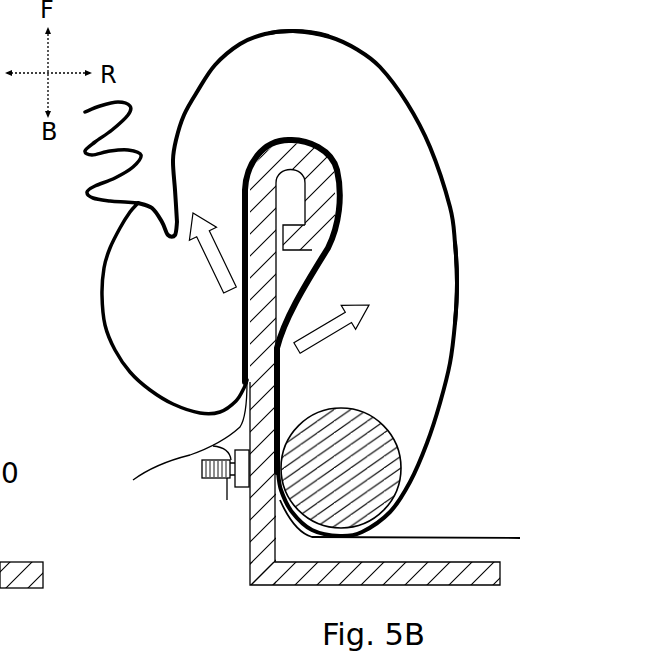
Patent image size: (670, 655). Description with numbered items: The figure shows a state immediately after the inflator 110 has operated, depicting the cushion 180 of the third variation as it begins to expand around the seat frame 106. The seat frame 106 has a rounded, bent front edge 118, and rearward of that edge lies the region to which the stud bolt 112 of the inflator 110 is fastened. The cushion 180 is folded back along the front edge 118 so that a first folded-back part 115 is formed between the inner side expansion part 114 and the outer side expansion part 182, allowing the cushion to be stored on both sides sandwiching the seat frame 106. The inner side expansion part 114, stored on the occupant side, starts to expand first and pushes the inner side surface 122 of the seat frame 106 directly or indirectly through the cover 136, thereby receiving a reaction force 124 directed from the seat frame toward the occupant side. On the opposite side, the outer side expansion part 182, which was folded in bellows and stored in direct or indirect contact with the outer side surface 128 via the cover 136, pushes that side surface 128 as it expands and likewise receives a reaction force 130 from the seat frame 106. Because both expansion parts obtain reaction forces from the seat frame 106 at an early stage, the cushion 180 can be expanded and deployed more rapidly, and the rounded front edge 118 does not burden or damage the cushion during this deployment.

The seat frame 106 is at (280, 588).
The inflator 110 is at (402, 470).
The stud bolt 112 is at (222, 483).
The inner side expansion part 114 is at (458, 245).
The first folded-back part 115 is at (288, 33).
The front edge 118 is at (294, 140).
The side surface 122 is at (281, 372).
The reaction force 124 is at (364, 297).
The side surface 128 is at (243, 345).
The reaction force 130 is at (211, 256).
The cover 136 is at (153, 479).
The cushion 180 is at (398, 76).
The outer side expansion part 182 is at (101, 279).